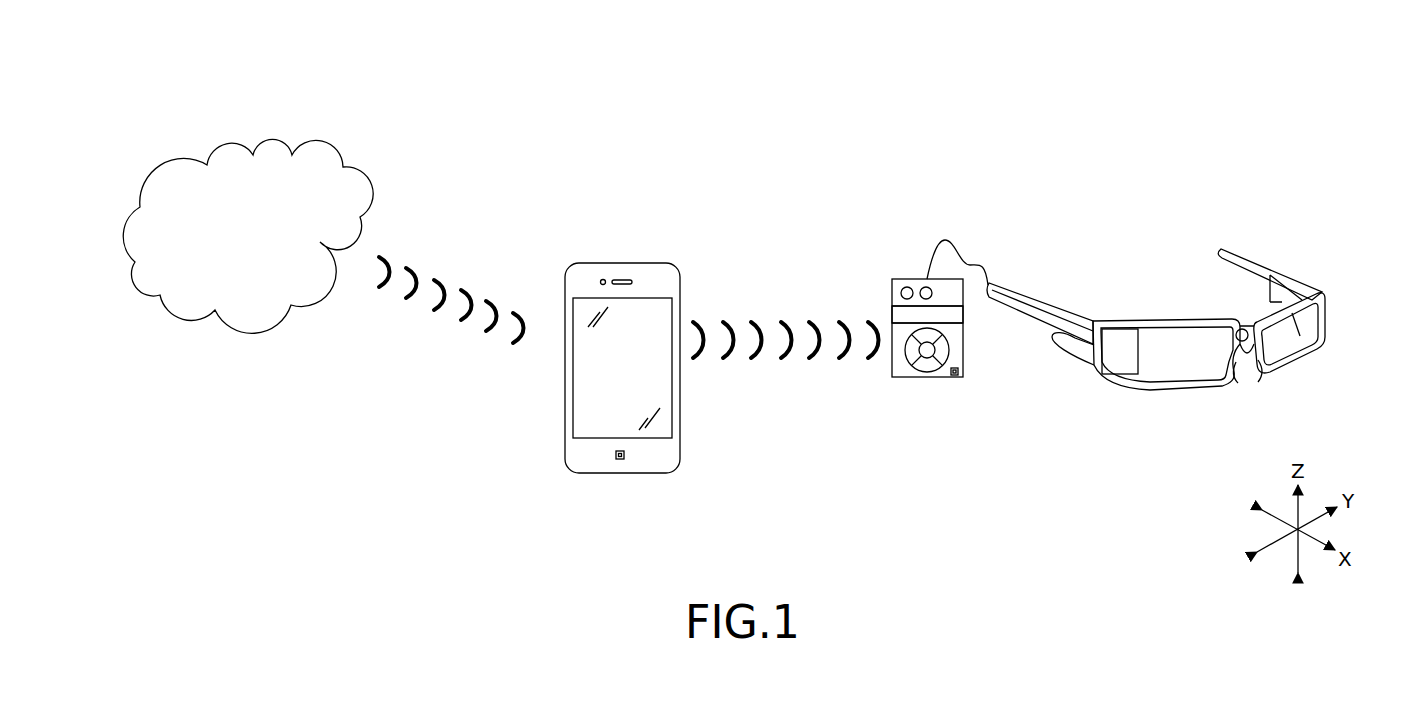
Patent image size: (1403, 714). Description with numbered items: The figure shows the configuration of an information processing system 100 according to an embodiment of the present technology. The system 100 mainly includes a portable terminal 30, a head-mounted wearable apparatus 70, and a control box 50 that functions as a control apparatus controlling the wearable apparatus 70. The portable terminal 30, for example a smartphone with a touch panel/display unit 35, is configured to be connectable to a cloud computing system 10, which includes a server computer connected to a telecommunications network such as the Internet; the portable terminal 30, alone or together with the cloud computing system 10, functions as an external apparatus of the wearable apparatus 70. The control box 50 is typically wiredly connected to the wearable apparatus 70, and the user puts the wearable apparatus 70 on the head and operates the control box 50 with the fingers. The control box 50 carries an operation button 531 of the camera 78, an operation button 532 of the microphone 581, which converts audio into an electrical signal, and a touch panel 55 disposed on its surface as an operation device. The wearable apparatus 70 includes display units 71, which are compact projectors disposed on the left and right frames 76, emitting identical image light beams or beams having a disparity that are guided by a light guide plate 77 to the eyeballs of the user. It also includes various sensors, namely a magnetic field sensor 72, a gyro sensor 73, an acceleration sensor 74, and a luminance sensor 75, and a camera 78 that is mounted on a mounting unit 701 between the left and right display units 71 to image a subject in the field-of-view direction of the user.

The information processing system 100 is at (783, 116).
The cloud computing system 10 is at (273, 142).
The portable terminal 30 is at (621, 263).
The touch panel/display unit 35 is at (590, 395).
The control box 50 is at (905, 279).
The operation button of the camera 531 is at (901, 293).
The operation button of the microphone 532 is at (922, 279).
The touch panel 55 is at (961, 315).
The microphone 581 is at (957, 377).
The wearable apparatus 70 is at (1103, 256).
The mounting unit 701 is at (1320, 274).
The frames 76 is at (1023, 305).
The magnetic field sensor 72 is at (1079, 350).
The gyro sensor 73 is at (1073, 349).
The acceleration sensor 74 is at (1073, 349).
The luminance sensor 75 is at (1073, 349).
The light guide plate 77 is at (1177, 365).
The display units 71 is at (1123, 358).
The camera 78 is at (1241, 329).